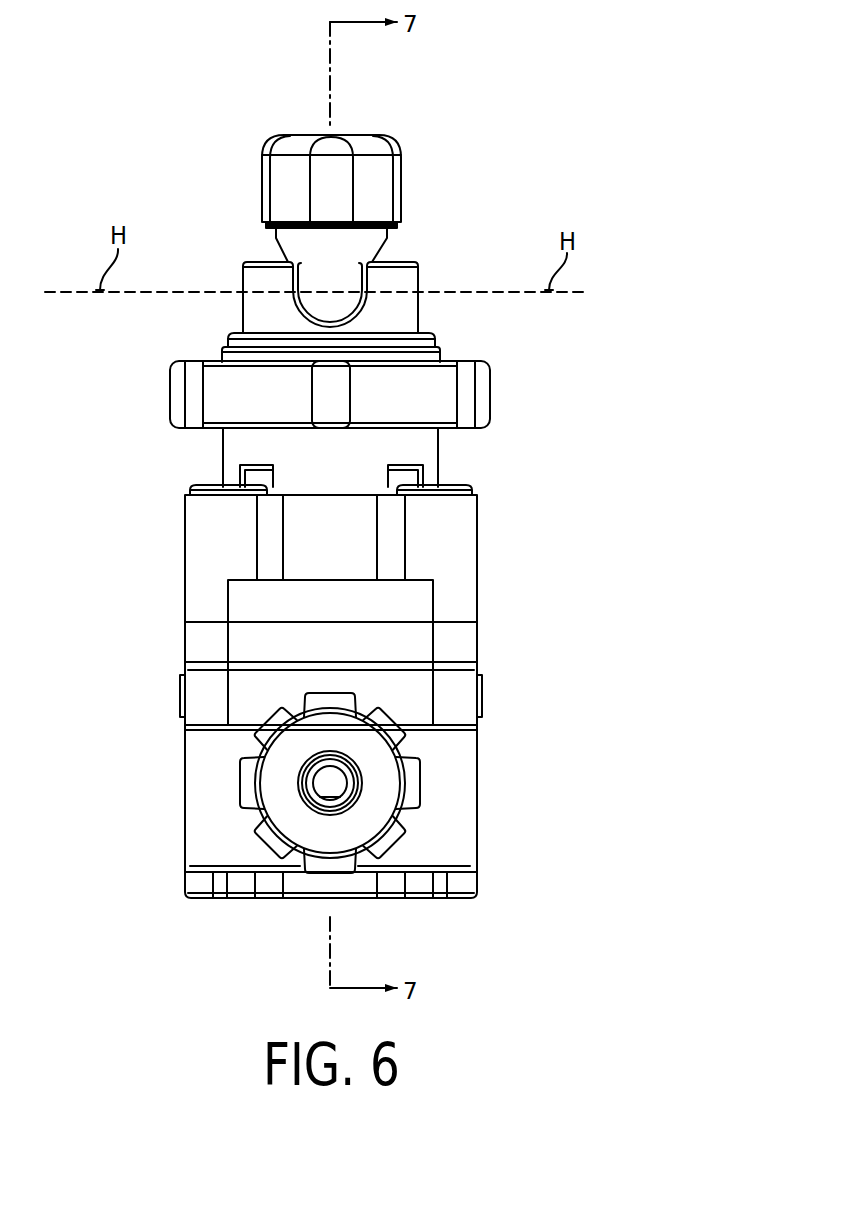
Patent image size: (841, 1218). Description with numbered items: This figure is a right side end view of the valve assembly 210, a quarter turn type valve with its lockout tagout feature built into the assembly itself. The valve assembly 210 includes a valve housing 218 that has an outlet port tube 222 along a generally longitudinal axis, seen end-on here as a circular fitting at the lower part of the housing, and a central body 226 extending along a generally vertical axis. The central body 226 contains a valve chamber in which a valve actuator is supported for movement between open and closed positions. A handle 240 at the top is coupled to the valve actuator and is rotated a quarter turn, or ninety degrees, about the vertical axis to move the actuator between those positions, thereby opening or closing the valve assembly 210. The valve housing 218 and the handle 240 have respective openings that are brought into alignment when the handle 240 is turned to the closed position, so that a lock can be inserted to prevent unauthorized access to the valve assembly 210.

The valve assembly 210 is at (618, 137).
The valve housing 218 is at (482, 550).
The outlet port tube 222 is at (398, 787).
The central body 226 is at (442, 470).
The handle 240 is at (399, 188).